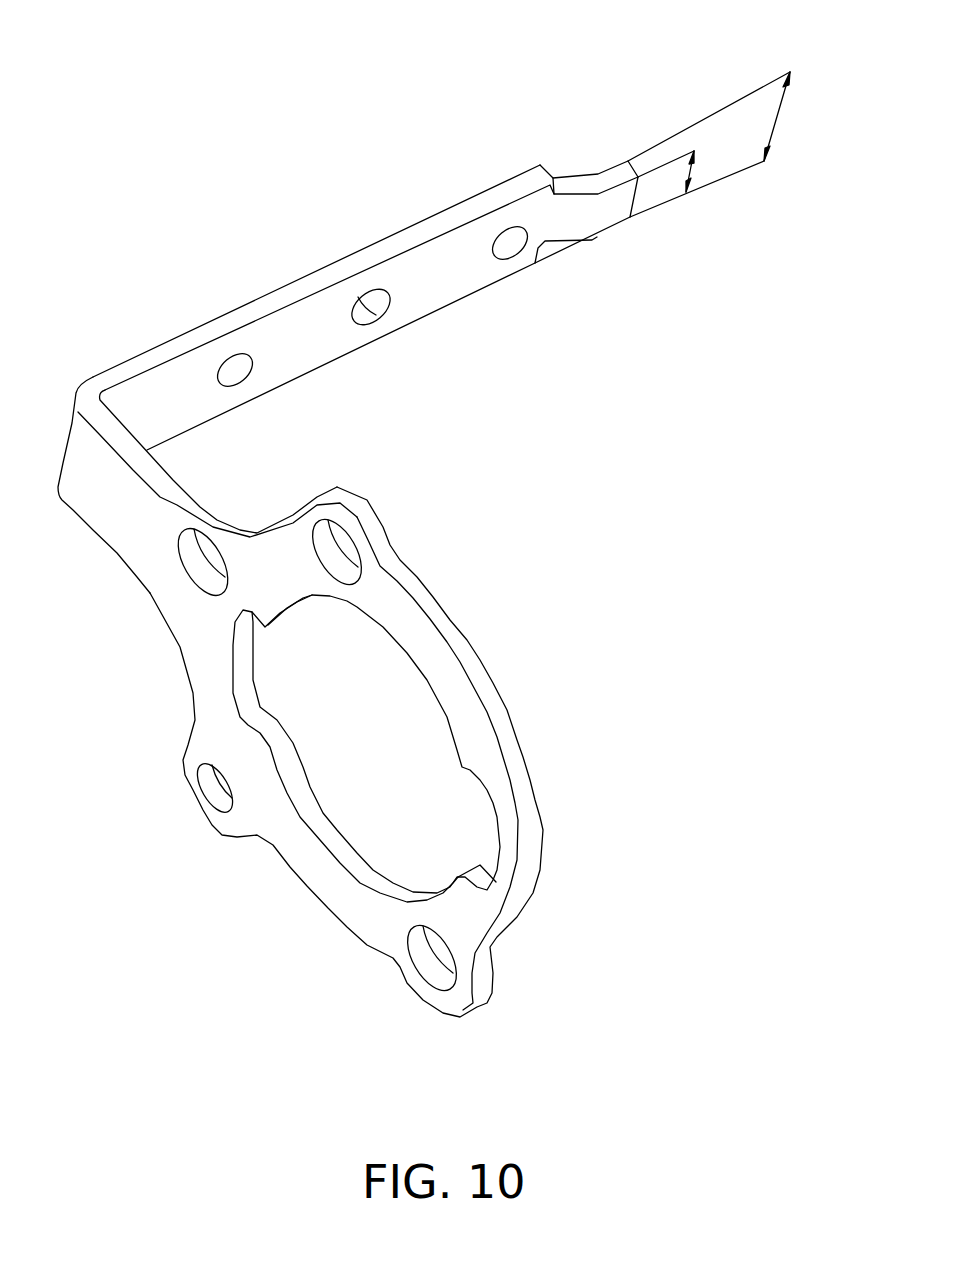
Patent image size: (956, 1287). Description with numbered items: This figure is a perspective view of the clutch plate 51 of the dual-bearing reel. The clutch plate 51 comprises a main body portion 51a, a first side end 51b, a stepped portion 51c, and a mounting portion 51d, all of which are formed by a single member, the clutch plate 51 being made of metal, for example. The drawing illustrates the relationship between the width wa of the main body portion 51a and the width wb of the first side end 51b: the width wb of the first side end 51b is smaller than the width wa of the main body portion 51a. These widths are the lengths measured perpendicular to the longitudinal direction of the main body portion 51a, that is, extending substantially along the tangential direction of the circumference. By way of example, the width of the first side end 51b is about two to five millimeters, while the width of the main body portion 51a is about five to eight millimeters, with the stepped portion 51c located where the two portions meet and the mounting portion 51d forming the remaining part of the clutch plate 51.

The clutch plate 51 is at (442, 568).
The main body portion 51a is at (322, 268).
The first side end 51b is at (615, 172).
The stepped portion 51c is at (568, 227).
The mounting portion 51d is at (337, 893).